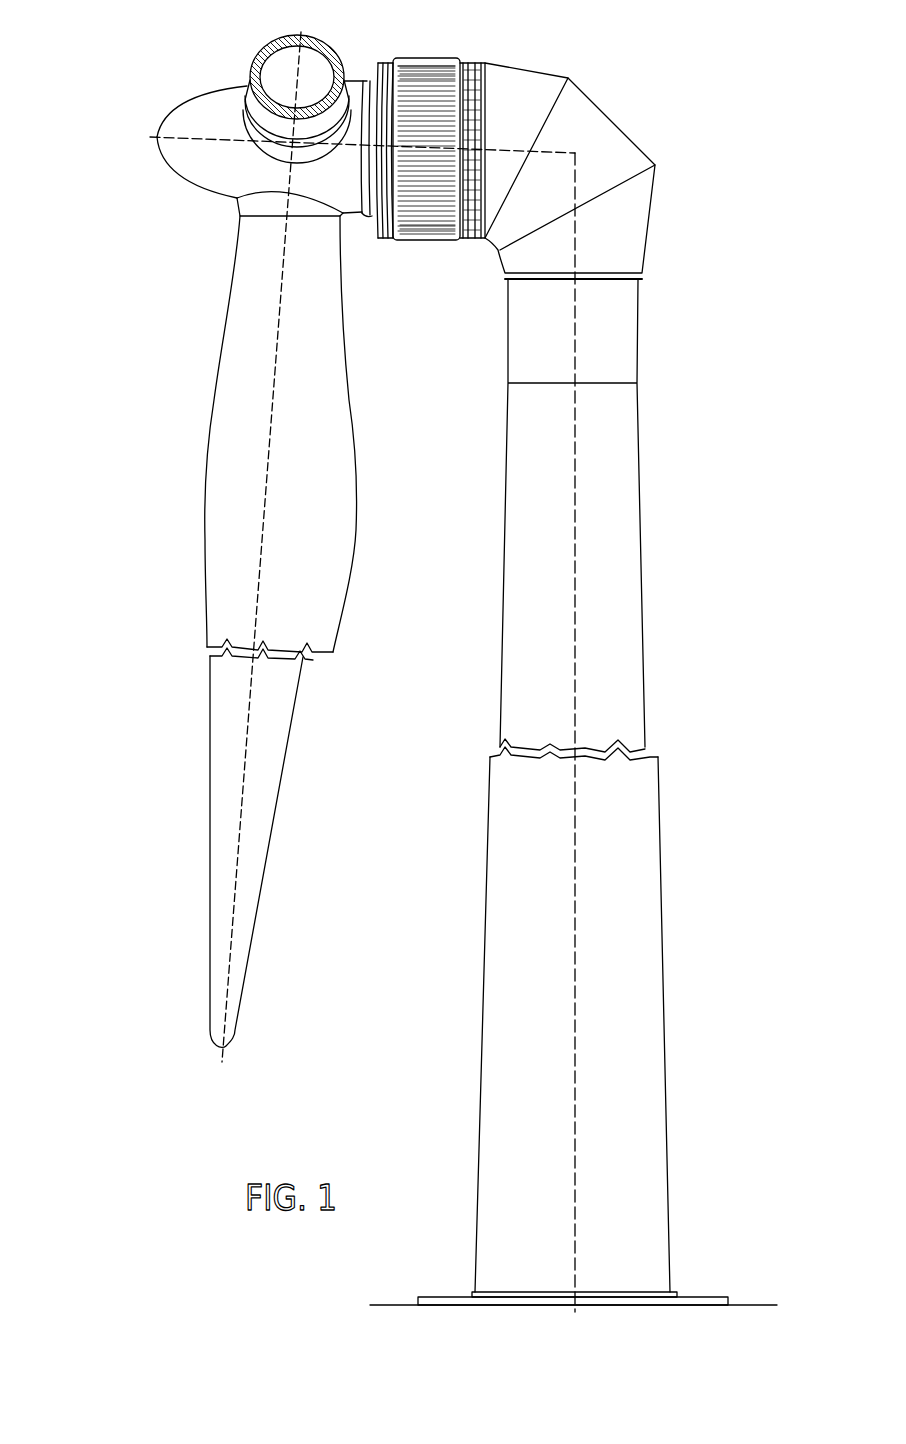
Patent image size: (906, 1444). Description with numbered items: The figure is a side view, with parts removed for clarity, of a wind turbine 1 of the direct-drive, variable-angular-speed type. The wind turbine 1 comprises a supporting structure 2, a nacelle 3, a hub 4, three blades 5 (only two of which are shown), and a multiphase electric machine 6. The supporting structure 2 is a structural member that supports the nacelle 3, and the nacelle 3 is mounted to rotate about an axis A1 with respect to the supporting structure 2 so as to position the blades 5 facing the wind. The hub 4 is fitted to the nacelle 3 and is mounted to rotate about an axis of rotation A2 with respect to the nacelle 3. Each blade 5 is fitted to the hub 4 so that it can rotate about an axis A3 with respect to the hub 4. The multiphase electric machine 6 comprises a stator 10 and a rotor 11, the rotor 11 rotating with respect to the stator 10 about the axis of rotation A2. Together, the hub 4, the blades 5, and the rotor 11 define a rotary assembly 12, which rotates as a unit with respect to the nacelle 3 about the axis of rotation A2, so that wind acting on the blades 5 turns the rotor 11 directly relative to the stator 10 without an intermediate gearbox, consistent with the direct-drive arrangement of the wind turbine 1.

The wind turbine 1 is at (177, 888).
The supporting structure 2 is at (625, 600).
The nacelle 3 is at (619, 94).
The hub 4 is at (357, 222).
The blades 5 is at (352, 95).
The multiphase electric machine 6 is at (458, 174).
The stator 10 is at (438, 244).
The rotor 11 is at (435, 66).
The rotary assembly 12 is at (156, 112).
The axis A1 is at (575, 995).
The axis of rotation A2 is at (240, 140).
The axis A3 is at (297, 63).